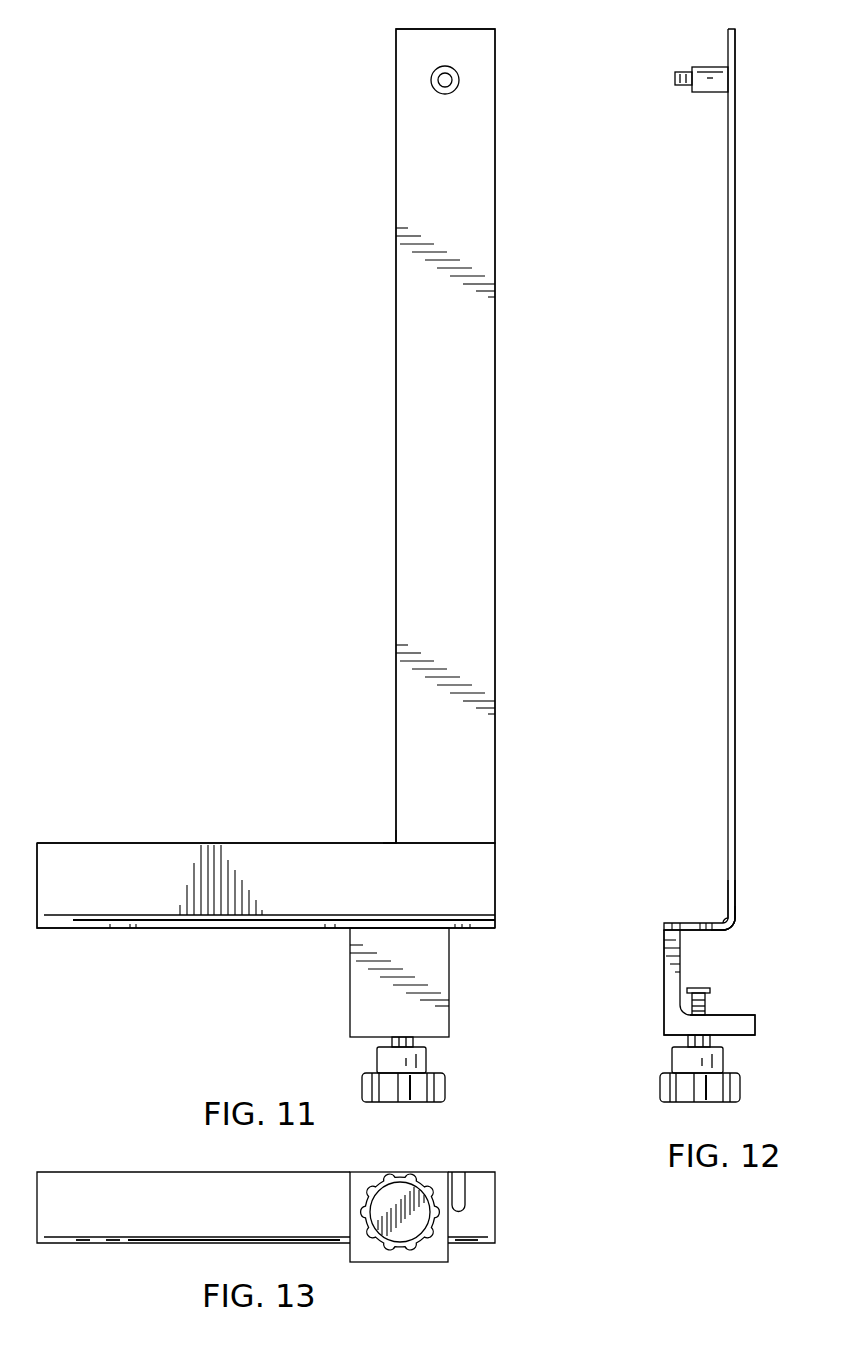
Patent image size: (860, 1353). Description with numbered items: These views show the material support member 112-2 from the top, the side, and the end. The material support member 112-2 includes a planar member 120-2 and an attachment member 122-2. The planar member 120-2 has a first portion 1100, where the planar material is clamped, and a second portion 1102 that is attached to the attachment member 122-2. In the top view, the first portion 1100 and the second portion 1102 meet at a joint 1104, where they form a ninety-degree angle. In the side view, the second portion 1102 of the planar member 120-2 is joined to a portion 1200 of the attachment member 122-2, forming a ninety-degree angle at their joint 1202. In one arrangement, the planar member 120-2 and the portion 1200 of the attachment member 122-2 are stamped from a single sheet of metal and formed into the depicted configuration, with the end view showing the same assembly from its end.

In FIG. 11, the material support member 112-2 is at (229, 575).
In FIG. 12, the material support member 112-2 is at (678, 670).
In FIG. 13, the material support member 112-2 is at (538, 1196).
In FIG. 11, the first portion 1100 is at (463, 397).
In FIG. 11, the second portion 1102 is at (75, 868).
In FIG. 12, the second portion 1102 is at (735, 888).
In FIG. 11, the joint 1104 is at (395, 838).
In FIG. 11, the planar member 120-2 is at (337, 882).
In FIG. 12, the planar member 120-2 is at (737, 523).
In FIG. 11, the attachment member 122-2 is at (350, 947).
In FIG. 12, the attachment member 122-2 is at (730, 1015).
In FIG. 12, the portion of the attachment member 1200 is at (676, 923).
In FIG. 12, the joint 1202 is at (725, 920).